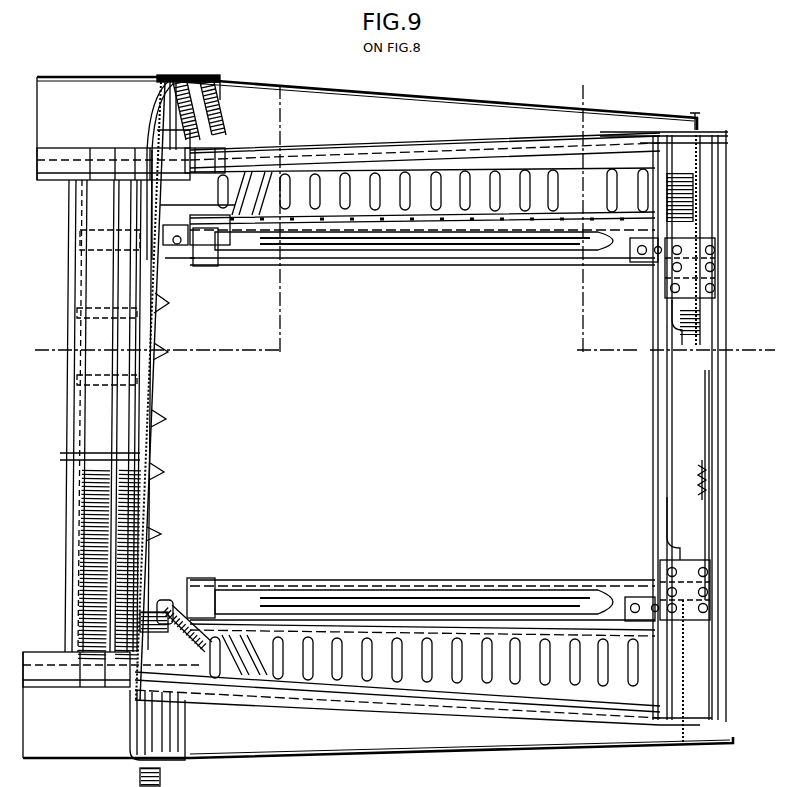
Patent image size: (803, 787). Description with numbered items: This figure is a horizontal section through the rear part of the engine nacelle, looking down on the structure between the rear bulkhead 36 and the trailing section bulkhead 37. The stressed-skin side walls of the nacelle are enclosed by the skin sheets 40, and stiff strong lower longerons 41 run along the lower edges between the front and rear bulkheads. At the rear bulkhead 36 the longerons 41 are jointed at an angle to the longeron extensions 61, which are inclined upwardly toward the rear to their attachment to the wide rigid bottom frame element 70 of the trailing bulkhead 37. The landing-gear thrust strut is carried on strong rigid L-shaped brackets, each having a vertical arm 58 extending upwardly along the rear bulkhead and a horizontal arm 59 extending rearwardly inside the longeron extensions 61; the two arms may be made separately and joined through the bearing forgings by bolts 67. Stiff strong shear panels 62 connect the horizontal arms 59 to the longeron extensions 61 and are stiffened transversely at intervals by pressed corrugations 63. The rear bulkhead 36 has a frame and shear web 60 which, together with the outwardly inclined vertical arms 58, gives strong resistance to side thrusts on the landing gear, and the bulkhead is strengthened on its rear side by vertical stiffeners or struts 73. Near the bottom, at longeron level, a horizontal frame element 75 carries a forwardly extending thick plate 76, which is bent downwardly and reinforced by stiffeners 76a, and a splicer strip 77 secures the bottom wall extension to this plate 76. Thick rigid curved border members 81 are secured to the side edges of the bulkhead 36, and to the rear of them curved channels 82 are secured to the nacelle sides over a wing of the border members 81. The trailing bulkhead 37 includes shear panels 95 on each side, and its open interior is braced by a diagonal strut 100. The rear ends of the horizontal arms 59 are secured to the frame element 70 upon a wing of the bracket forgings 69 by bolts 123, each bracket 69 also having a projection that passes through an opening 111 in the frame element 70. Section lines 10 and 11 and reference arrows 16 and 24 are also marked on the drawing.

The section line 10 is at (600, 243).
The section line 11 is at (750, 190).
The center line 16 is at (577, 351).
The center line 24 is at (281, 350).
The rear bulkhead 36 is at (152, 505).
The trailing section bulkhead 37 is at (700, 180).
The skin sheets 40 is at (485, 96).
The lower longerons 41 is at (45, 175).
The vertical arm 58 is at (190, 140).
The horizontal arm 59 is at (348, 250).
The frame and shear web 60 is at (150, 456).
The longeron extensions 61 is at (372, 153).
The shear panels 62 is at (420, 205).
The pressed corrugations 63 is at (472, 204).
The bolts 67 is at (202, 258).
The bracket forging 69 is at (687, 297).
The bottom frame element 70 is at (666, 460).
The vertical stiffeners or struts 73 is at (162, 422).
The horizontal frame element 75 is at (129, 403).
The thick plate 76 is at (95, 292).
The stiffeners 76a is at (90, 252).
The splicer strip 77 is at (80, 330).
The curved border members 81 is at (197, 70).
The curved channels 82 is at (217, 100).
The shear panels 95 is at (695, 200).
The diagonal strut 100 is at (706, 482).
The opening 111 is at (678, 323).
The bolts 123 is at (635, 600).